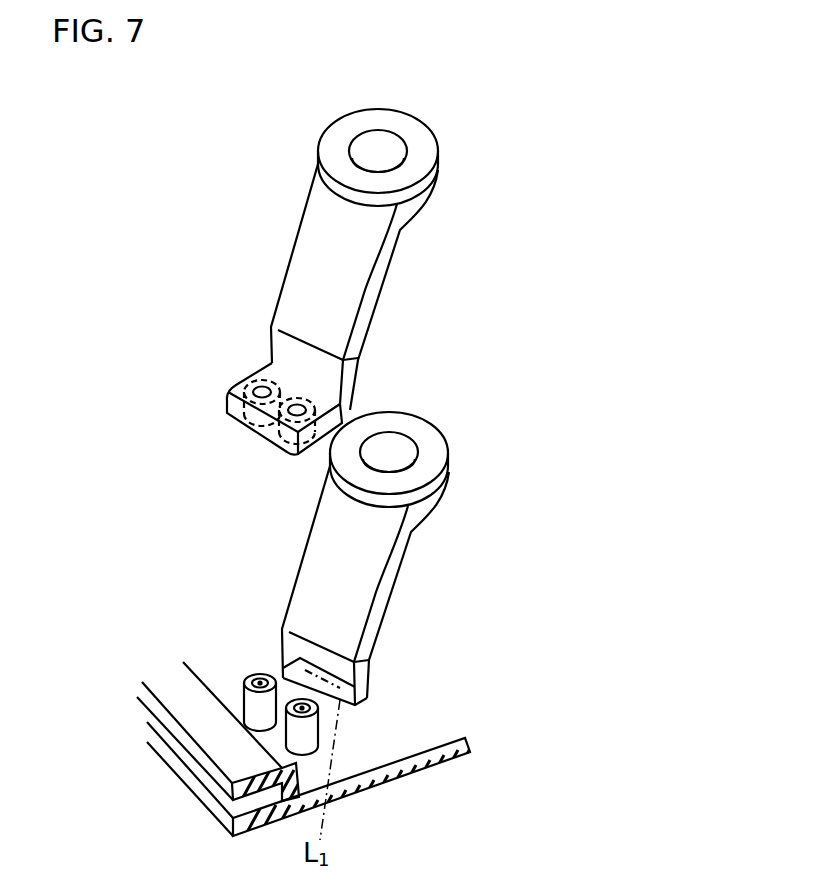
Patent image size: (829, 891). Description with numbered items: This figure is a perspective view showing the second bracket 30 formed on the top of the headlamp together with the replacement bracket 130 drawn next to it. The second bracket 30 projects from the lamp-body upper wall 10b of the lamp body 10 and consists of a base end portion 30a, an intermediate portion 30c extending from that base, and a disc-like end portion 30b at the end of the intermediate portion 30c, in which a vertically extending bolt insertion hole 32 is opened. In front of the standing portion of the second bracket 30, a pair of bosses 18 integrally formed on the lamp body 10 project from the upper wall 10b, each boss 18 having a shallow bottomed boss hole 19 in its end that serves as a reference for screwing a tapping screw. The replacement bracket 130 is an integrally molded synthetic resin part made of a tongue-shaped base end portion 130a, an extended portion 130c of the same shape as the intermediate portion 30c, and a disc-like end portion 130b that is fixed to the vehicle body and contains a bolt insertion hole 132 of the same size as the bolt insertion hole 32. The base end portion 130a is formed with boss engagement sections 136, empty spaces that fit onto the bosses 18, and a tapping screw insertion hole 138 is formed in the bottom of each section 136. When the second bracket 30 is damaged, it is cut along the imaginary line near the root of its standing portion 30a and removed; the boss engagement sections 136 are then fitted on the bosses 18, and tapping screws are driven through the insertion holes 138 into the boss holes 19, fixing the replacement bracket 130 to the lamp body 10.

The lamp body 10 is at (386, 800).
The lamp-body upper wall 10b is at (417, 743).
The boss 18 is at (246, 710).
The boss hole 19 is at (246, 684).
The second bracket 30 is at (367, 558).
The base end portion 30a is at (272, 642).
The disc-like end portion 30b is at (447, 472).
The intermediate portion 30c is at (403, 572).
The bolt insertion hole 32 is at (407, 452).
The replacement bracket 130 is at (337, 318).
The tongue-shaped base end portion 130a is at (240, 426).
The disc-like end portion 130b is at (431, 167).
The extended portion 130c is at (294, 242).
The bolt insertion hole 132 is at (389, 147).
The boss engagement section 136 is at (252, 384).
The tapping screw insertion hole 138 is at (252, 392).